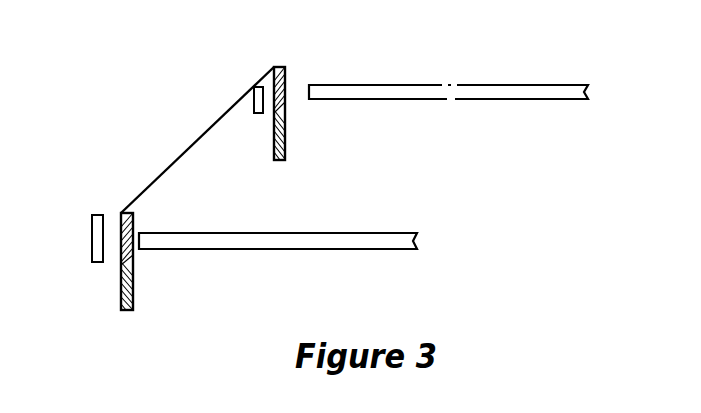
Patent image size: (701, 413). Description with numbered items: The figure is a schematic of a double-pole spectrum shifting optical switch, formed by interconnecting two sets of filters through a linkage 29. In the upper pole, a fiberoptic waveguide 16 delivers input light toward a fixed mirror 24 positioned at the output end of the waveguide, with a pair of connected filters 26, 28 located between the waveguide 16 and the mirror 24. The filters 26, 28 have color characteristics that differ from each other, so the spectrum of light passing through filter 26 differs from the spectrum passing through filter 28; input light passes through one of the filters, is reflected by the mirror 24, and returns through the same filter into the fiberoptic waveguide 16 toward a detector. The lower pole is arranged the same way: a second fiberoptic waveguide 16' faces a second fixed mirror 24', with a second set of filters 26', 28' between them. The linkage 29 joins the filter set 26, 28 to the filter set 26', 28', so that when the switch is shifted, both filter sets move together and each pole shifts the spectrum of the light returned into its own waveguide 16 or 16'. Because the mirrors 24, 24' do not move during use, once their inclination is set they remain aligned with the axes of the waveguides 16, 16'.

The fiberoptic waveguide 16 is at (448, 73).
The fiberoptic waveguide 16' is at (278, 223).
The mirror 24 is at (244, 122).
The mirror 24' is at (80, 227).
The filter 26 is at (298, 102).
The filter 26' is at (151, 252).
The filter 28 is at (306, 146).
The filter 28' is at (154, 298).
The linkage 29 is at (187, 148).